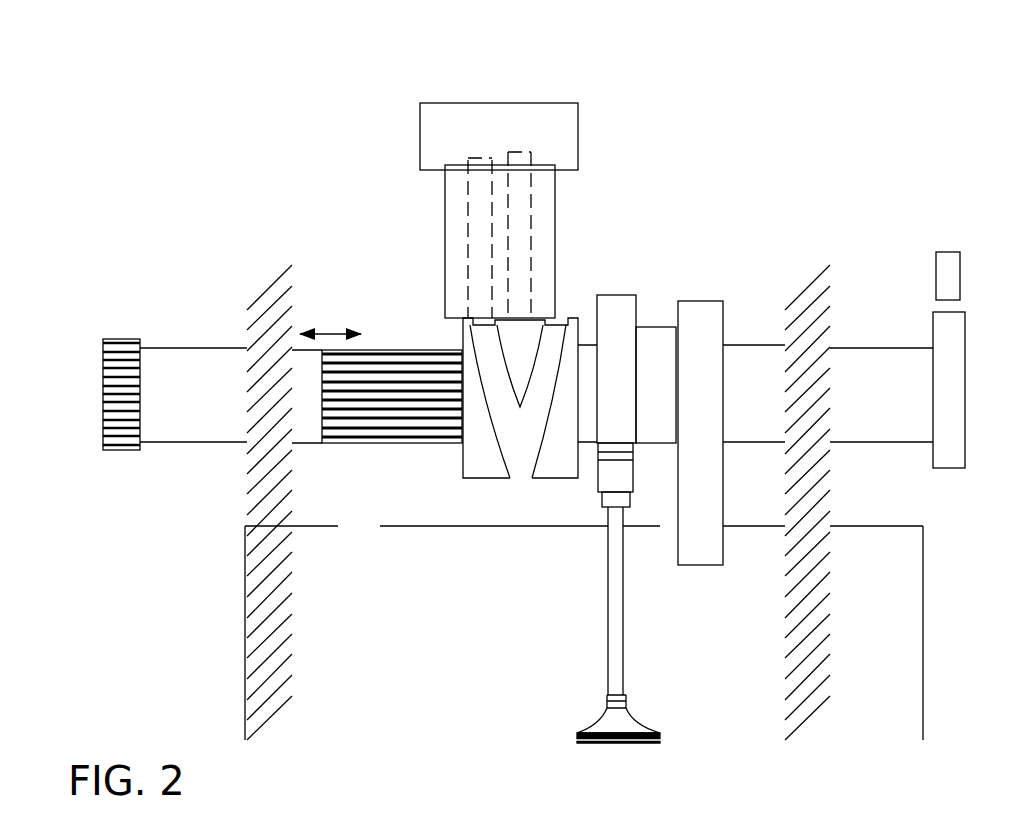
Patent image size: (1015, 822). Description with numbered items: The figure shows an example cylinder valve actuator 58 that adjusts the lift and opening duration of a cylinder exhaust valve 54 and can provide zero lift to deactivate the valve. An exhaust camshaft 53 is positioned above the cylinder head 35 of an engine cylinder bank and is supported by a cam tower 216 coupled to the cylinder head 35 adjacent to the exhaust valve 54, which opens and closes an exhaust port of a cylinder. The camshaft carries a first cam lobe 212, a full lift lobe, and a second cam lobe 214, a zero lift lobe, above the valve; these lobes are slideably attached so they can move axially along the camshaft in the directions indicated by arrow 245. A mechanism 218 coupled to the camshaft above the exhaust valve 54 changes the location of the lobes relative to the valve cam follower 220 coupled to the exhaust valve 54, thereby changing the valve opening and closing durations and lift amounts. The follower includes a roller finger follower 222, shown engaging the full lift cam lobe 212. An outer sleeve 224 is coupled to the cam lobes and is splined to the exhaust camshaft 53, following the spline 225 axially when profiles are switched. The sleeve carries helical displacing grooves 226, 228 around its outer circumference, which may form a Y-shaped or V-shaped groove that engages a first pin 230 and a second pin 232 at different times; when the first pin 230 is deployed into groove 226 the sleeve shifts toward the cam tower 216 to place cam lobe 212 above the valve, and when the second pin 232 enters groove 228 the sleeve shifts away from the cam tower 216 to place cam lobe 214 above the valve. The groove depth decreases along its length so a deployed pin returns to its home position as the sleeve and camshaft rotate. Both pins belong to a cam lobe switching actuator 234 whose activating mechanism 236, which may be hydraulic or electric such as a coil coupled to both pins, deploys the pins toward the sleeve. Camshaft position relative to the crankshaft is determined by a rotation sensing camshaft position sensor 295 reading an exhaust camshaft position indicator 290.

The cylinder head 35 is at (913, 525).
The exhaust camshaft 53 is at (190, 348).
The exhaust valve 54 is at (607, 535).
The cylinder valve actuator 58 is at (537, 438).
The first cam lobe 212 is at (663, 437).
The second cam lobe 214 is at (640, 327).
The cam tower 216 is at (700, 325).
The mechanism 218 is at (449, 418).
The valve cam follower 220 is at (495, 418).
The roller finger follower 222 is at (617, 468).
The outer sleeve 224 is at (487, 470).
The spline 225 is at (363, 447).
The first displacing groove 226 is at (502, 375).
The second displacing groove 228 is at (549, 352).
The first pin 230 is at (482, 215).
The second pin 232 is at (520, 205).
The cam lobe switching actuator 234 is at (456, 179).
The activating mechanism 236 is at (487, 118).
The arrow 245 is at (330, 331).
The exhaust camshaft position indicator 290 is at (965, 380).
The camshaft position sensor 295 is at (950, 252).